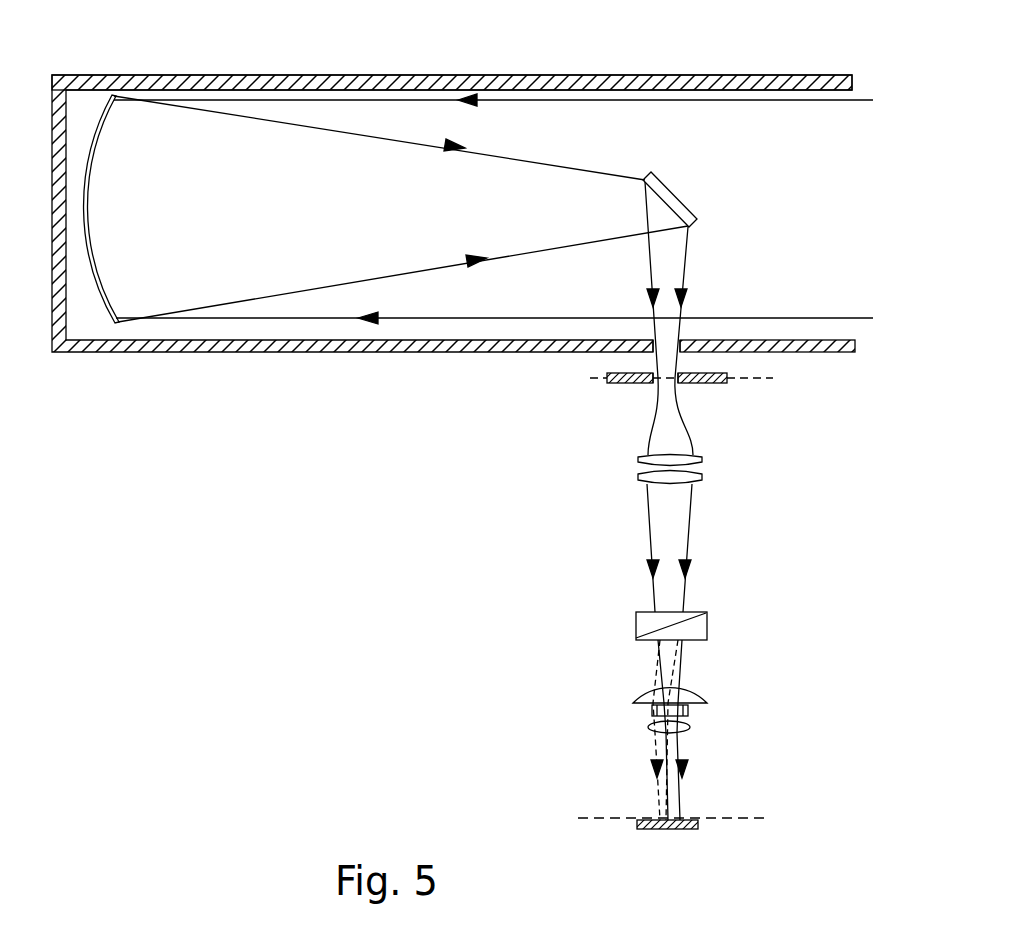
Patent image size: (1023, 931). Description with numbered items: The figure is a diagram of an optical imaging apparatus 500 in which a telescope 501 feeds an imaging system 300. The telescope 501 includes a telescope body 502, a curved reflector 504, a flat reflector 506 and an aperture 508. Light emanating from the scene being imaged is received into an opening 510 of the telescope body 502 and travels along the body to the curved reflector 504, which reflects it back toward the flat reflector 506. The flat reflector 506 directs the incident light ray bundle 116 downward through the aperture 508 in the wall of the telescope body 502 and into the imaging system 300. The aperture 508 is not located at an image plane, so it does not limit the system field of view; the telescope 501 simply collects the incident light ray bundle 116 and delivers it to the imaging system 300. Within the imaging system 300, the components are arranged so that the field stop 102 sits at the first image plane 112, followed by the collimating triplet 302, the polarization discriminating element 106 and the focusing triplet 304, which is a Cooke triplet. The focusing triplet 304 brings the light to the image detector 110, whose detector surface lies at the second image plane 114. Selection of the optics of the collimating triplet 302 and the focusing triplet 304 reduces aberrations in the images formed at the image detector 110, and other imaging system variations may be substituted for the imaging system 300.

The telescope 501 is at (480, 73).
The telescope body 502 is at (670, 78).
The curved reflector 504 is at (90, 208).
The flat reflector 506 is at (677, 197).
The aperture 508 is at (681, 338).
The opening 510 is at (850, 217).
The apparatus 500 is at (330, 503).
The field stop 102 is at (698, 384).
The incident light ray bundle 116 is at (670, 364).
The first image plane 112 is at (586, 377).
The collimating triplet 302 is at (730, 482).
The imaging system 300 is at (752, 638).
The polarization discriminating element 106 is at (707, 623).
The focusing triplet 304 is at (707, 725).
The second image plane 114 is at (748, 820).
The image detector 110 is at (667, 829).